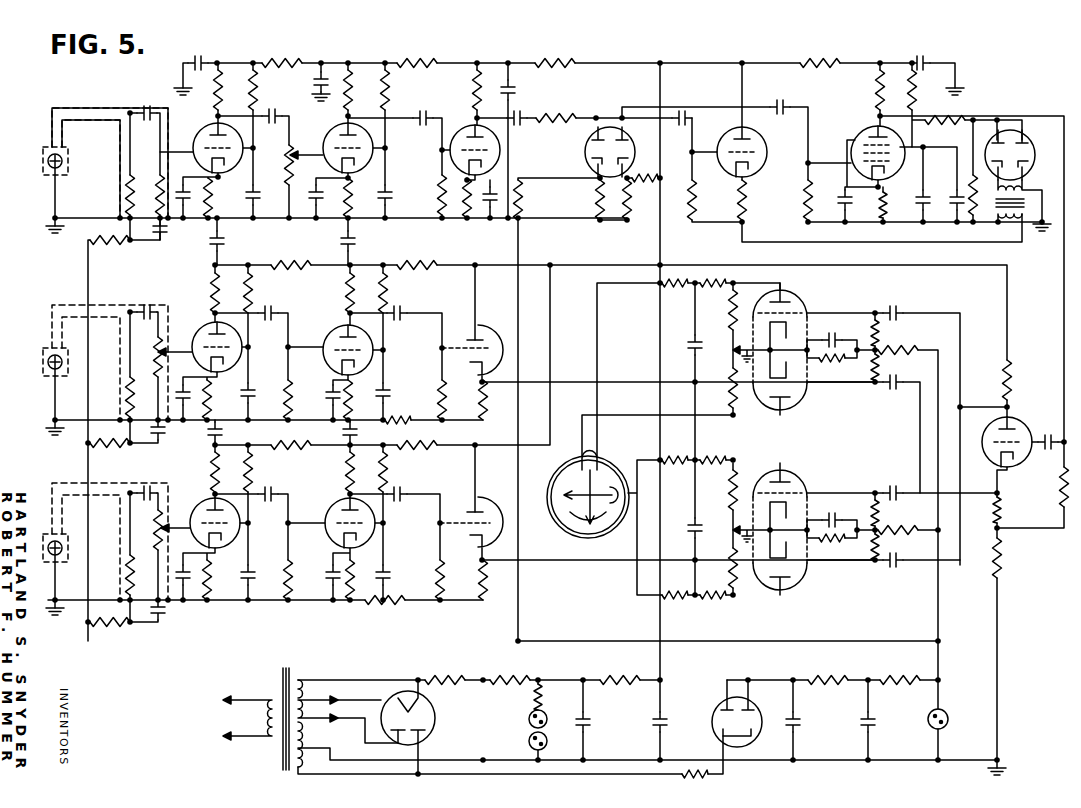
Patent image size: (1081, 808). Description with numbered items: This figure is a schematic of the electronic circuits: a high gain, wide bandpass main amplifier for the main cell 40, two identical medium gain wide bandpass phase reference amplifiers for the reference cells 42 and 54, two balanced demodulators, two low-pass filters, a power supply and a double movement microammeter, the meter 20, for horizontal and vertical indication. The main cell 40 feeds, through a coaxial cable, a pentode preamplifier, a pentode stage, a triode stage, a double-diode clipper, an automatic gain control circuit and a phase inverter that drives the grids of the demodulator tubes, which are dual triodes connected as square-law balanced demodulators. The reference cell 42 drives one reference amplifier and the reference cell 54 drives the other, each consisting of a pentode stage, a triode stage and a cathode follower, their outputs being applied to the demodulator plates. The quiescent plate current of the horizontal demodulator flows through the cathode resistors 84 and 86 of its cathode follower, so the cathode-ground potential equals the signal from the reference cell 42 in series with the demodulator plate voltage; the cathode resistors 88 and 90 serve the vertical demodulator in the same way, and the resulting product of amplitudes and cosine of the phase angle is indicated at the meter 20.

The meter 20 is at (572, 532).
The main cell 40 is at (47, 164).
The reference cell 42 is at (47, 365).
The reference cell 54 is at (61, 554).
The cathode resistor 84 is at (481, 408).
The cathode resistor 86 is at (410, 418).
The cathode resistor 88 is at (478, 593).
The cathode resistor 90 is at (387, 598).